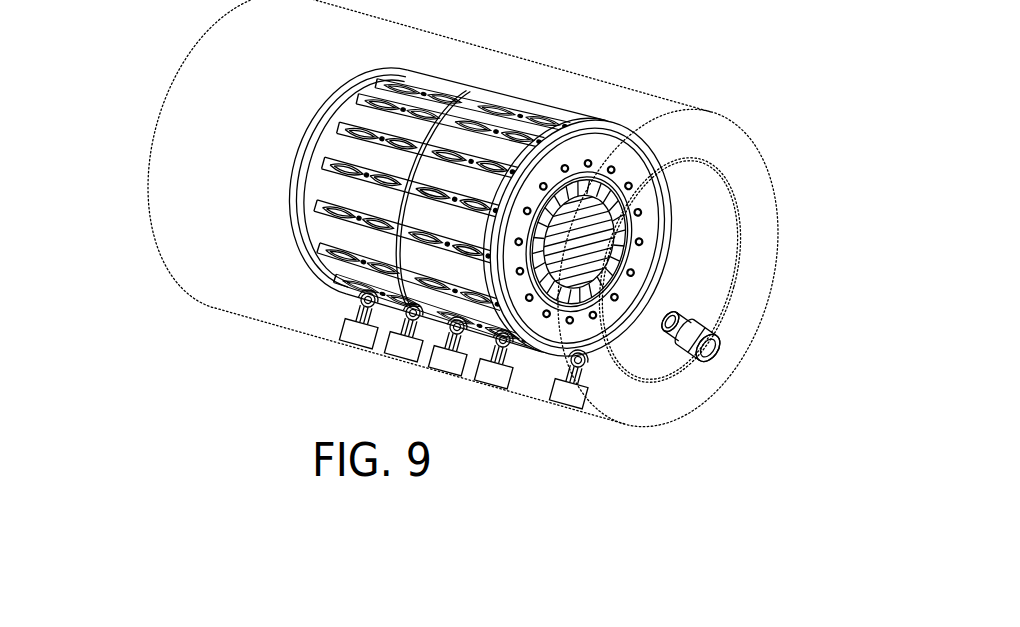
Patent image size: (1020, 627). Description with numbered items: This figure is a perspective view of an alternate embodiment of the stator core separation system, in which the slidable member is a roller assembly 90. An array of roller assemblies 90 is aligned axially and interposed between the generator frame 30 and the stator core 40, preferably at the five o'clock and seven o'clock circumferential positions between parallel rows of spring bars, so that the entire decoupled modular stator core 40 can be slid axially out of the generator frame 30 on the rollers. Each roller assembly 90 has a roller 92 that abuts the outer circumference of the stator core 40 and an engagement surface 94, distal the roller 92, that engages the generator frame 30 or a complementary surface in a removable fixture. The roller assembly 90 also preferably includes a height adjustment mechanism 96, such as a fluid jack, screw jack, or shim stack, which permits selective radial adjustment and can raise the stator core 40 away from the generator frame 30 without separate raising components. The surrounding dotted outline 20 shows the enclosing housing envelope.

The housing 20 is at (134, 123).
The generator frame 30 is at (642, 62).
The stator core 40 is at (471, 82).
The roller assembly 90 is at (724, 318).
The roller 92 is at (679, 312).
The engagement surface 94 is at (690, 357).
The height adjustment mechanism 96 is at (710, 352).